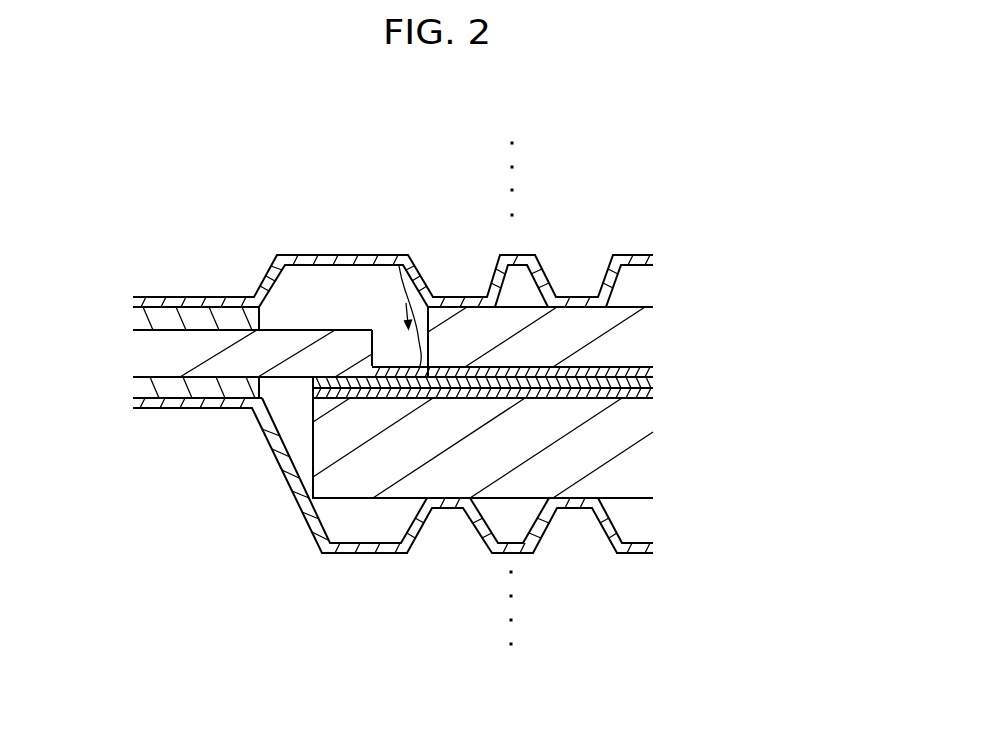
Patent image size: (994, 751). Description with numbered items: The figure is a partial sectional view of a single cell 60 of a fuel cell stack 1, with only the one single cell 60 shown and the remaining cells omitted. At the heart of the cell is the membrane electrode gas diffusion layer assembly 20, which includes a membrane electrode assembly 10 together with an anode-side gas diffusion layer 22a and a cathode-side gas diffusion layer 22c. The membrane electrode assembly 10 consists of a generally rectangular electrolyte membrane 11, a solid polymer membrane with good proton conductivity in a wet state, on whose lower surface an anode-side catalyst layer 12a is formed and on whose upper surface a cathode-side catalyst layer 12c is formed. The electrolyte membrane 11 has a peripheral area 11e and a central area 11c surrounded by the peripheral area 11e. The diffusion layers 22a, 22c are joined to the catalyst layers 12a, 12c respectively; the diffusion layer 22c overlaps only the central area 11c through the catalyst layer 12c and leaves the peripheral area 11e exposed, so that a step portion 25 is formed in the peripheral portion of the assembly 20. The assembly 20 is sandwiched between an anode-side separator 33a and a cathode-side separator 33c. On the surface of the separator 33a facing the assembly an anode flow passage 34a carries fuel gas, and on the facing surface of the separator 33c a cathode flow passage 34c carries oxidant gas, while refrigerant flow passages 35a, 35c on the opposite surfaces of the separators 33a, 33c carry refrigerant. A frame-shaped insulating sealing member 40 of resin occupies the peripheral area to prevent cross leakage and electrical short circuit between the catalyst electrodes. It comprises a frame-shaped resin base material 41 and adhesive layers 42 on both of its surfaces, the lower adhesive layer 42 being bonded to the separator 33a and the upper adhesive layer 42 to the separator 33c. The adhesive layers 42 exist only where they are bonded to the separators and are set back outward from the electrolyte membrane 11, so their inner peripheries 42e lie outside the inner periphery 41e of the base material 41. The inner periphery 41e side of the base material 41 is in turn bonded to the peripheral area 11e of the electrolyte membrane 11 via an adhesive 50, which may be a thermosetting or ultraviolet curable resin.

The fuel cell stack 1 is at (700, 163).
The single cell 60 is at (681, 262).
The membrane electrode assembly 10 is at (535, 383).
The electrolyte membrane 11 is at (646, 381).
The central area 11c is at (466, 370).
The peripheral area 11e is at (350, 363).
The cathode-side catalyst layer 12c is at (646, 370).
The anode-side catalyst layer 12a is at (646, 394).
The membrane electrode gas diffusion layer assembly 20 is at (567, 402).
The cathode-side gas diffusion layer 22c is at (640, 337).
The anode-side gas diffusion layer 22a is at (640, 458).
The step portion 25 is at (398, 253).
The cathode-side separator 33c is at (268, 270).
The anode-side separator 33a is at (305, 517).
The cathode flow passage 34c is at (353, 299).
The refrigerant flow passage 35c is at (464, 278).
The anode flow passage 34a is at (382, 529).
The refrigerant flow passage 35a is at (466, 547).
The sealing member 40 is at (350, 355).
The base material 41 is at (163, 354).
The adhesive layer 42 is at (163, 320).
The inner periphery of adhesive layer 42e is at (262, 329).
The inner periphery of base material 41e is at (376, 365).
The adhesive 50 is at (397, 366).